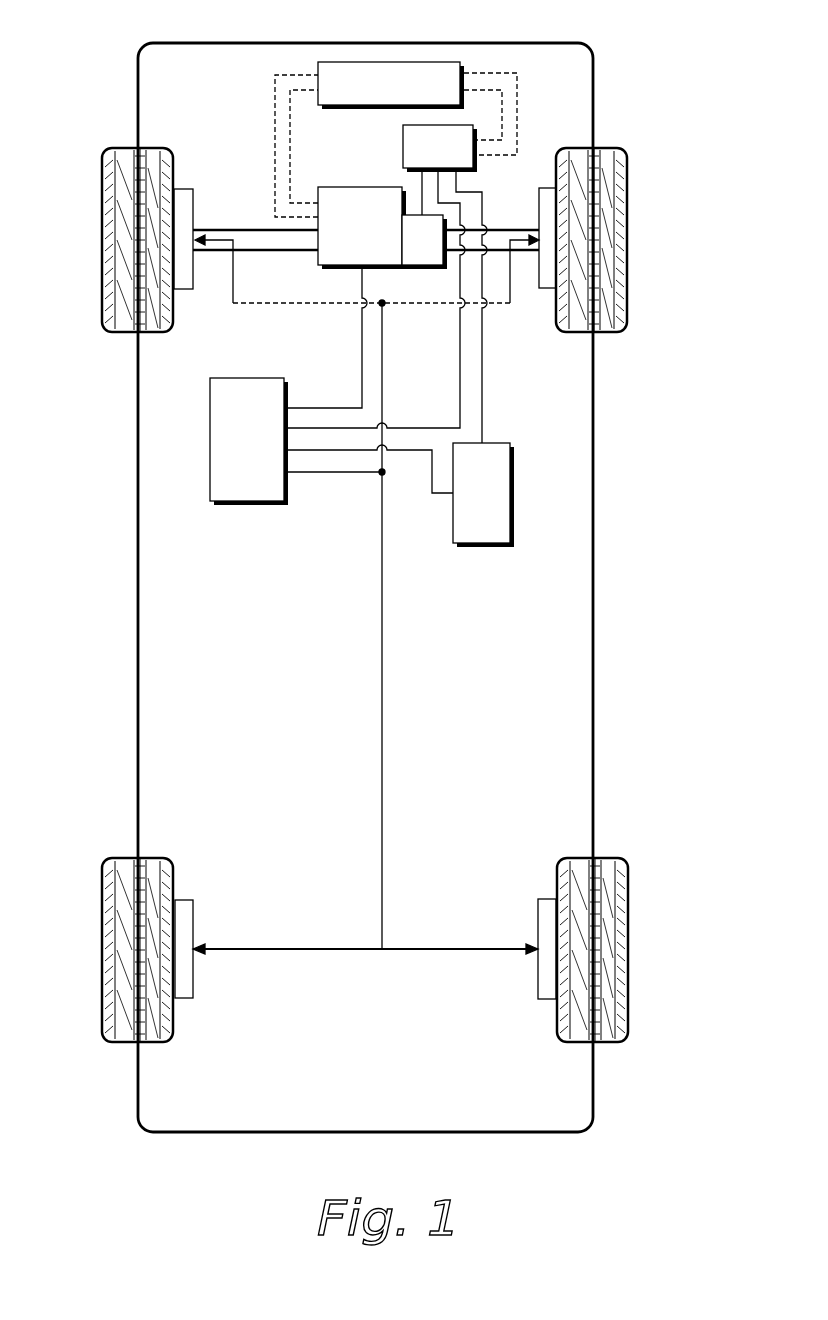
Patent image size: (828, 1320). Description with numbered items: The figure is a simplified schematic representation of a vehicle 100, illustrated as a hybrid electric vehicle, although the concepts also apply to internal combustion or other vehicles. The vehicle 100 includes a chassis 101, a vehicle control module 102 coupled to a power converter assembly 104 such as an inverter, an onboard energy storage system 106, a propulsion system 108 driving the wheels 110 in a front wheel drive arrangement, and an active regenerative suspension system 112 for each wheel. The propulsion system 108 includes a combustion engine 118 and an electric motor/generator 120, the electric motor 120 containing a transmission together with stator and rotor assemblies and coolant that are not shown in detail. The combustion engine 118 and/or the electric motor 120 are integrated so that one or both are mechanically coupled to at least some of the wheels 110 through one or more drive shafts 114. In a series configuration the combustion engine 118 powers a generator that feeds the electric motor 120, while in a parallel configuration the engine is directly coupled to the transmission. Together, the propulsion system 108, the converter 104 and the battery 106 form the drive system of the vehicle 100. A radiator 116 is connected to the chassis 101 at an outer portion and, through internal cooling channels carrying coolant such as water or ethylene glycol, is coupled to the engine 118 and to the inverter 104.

The vehicle 100 is at (628, 58).
The chassis 101 is at (137, 497).
The vehicle control module 102 is at (242, 378).
The power converter assembly 104 is at (417, 158).
The onboard energy storage system 106 is at (546, 451).
The propulsion system 108 is at (338, 315).
The wheels 110 is at (106, 218).
The active regenerative suspension system 112 is at (193, 189).
The drive shafts 114 is at (243, 230).
The radiator 116 is at (362, 100).
The combustion engine 118 is at (330, 260).
The electric motor/generator 120 is at (428, 262).